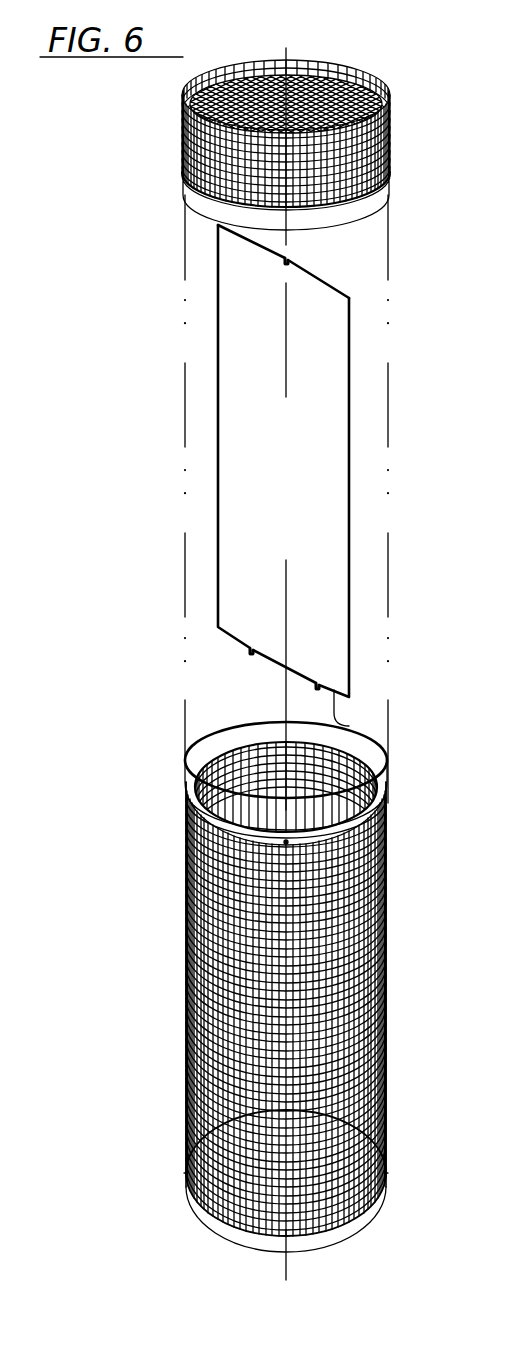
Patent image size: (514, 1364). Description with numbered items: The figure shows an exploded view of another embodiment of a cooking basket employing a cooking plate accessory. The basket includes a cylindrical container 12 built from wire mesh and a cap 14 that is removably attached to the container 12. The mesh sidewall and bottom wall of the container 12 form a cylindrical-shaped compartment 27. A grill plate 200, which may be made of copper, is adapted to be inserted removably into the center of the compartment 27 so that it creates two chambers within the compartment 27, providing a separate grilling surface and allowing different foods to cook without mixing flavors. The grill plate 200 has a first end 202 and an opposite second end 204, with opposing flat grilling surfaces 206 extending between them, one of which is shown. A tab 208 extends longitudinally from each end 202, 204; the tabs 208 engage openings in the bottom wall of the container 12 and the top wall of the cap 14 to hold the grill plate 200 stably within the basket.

The container 12 is at (390, 962).
The cap 14 is at (185, 138).
The compartment 27 is at (190, 755).
The grill plate 200 is at (302, 463).
The first end 202 is at (349, 290).
The second end 204 is at (350, 727).
The grilling surface 206 is at (245, 458).
The tab 208 is at (287, 258).